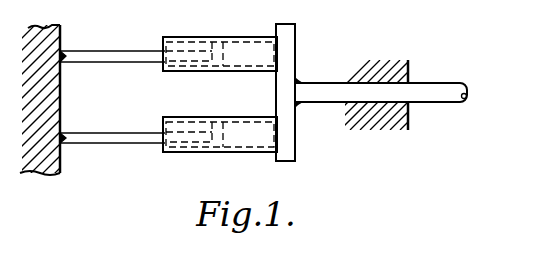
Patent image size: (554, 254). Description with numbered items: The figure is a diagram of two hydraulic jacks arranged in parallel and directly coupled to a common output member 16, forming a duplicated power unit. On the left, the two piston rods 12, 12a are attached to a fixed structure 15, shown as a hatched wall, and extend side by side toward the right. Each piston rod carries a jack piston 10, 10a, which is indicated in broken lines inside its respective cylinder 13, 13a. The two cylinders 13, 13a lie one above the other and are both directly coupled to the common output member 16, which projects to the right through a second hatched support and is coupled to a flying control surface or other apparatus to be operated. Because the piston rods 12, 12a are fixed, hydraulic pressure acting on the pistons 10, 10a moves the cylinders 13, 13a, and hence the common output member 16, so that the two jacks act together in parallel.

The jack piston 10 is at (216, 43).
The jack piston 10a is at (220, 122).
The piston rod 12 is at (119, 49).
The piston rod 12a is at (116, 131).
The cylinder 13 is at (251, 40).
The cylinder 13a is at (246, 152).
The fixed structure 15 is at (55, 88).
The common output member 16 is at (315, 82).